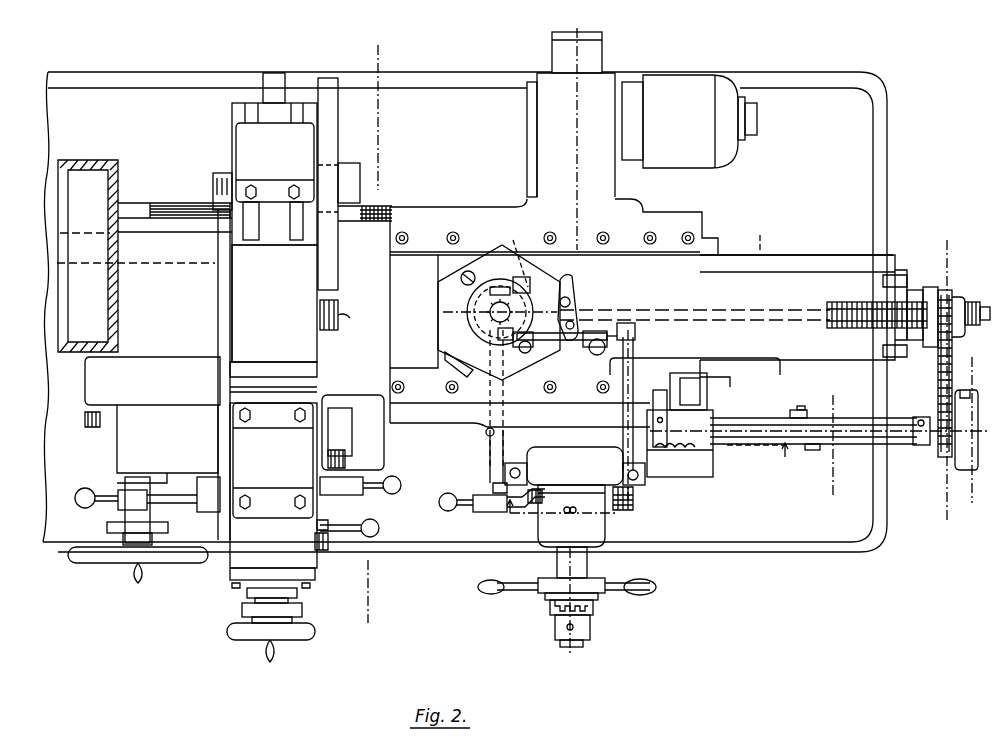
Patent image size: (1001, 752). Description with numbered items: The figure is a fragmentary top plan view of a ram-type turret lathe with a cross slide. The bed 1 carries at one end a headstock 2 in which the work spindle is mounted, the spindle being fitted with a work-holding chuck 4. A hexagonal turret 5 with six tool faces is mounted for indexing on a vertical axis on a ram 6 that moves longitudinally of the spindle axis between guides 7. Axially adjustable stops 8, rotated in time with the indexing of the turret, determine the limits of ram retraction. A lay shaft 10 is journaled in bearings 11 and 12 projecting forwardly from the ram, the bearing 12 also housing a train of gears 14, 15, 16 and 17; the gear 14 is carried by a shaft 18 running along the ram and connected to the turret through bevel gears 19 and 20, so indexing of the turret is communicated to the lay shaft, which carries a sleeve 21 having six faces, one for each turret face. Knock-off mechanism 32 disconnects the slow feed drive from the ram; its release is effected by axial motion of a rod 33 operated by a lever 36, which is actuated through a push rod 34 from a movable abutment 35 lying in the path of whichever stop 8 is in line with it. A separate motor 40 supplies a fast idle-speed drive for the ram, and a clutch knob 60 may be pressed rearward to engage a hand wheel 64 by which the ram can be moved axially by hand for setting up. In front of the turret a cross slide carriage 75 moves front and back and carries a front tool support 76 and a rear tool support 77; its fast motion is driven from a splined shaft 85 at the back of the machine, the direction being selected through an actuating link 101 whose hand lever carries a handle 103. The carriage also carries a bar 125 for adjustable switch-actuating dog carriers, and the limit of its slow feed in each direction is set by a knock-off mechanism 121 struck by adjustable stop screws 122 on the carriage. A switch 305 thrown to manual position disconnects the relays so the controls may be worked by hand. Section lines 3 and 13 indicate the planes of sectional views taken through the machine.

The bed 1 is at (477, 72).
The headstock 2 is at (98, 160).
The section line 3- 3 is at (930, 261).
The work-holding chuck 4 is at (965, 368).
The turret 5 is at (487, 250).
The ram 6 is at (745, 280).
The guides 7 is at (658, 222).
The axially adjustable stops 8 is at (968, 302).
The lay shaft 10 is at (725, 440).
The bearing 11 is at (666, 455).
The bearing 12 is at (940, 447).
The section line 13- 13 is at (345, 51).
The gear 14 is at (953, 290).
The gear 15 is at (930, 348).
The gear 16 is at (577, 30).
The gear 17 is at (570, 562).
The shaft 18 is at (793, 312).
The bevel gear 19 is at (545, 284).
The bevel gear 20 is at (462, 318).
The sleeve 21 is at (862, 432).
The knock-off mechanism 32 is at (465, 495).
The rod 33 is at (496, 428).
The push rod 34 is at (612, 330).
The movable abutment 35 is at (636, 336).
The lever 36 is at (530, 372).
The motor 40 is at (692, 85).
The clutch knob 60 is at (595, 629).
The hand wheel 64 is at (525, 595).
The cross slide carriage 75 is at (240, 330).
The front tool support 76 is at (280, 514).
The rear tool support 77 is at (240, 140).
The splined shaft 85 is at (383, 206).
The actuating link 101 is at (218, 284).
The handle 103 is at (388, 520).
The knock-off mechanism 121 is at (342, 462).
The adjustable stop screws 122 is at (350, 312).
The bar 125 is at (335, 142).
The switch 305 is at (574, 490).